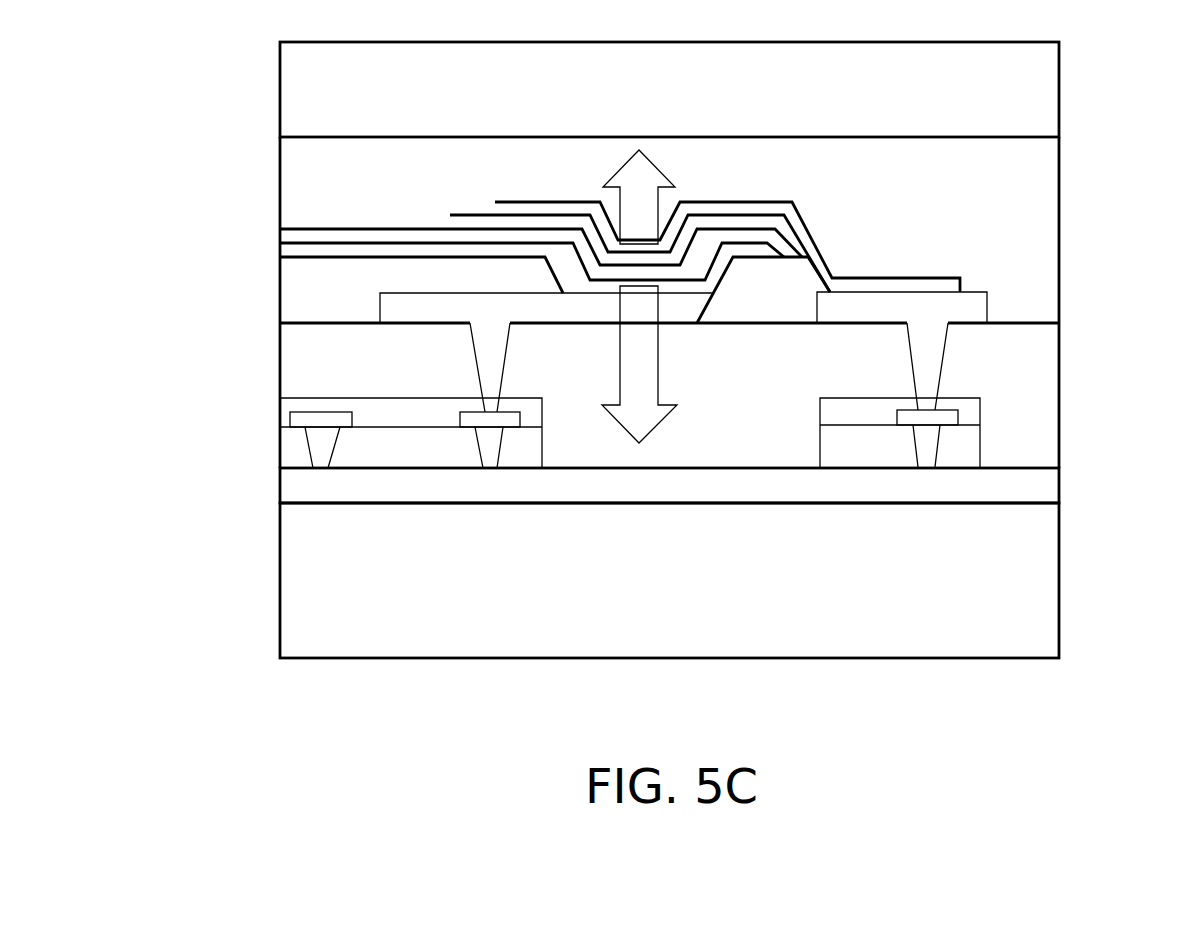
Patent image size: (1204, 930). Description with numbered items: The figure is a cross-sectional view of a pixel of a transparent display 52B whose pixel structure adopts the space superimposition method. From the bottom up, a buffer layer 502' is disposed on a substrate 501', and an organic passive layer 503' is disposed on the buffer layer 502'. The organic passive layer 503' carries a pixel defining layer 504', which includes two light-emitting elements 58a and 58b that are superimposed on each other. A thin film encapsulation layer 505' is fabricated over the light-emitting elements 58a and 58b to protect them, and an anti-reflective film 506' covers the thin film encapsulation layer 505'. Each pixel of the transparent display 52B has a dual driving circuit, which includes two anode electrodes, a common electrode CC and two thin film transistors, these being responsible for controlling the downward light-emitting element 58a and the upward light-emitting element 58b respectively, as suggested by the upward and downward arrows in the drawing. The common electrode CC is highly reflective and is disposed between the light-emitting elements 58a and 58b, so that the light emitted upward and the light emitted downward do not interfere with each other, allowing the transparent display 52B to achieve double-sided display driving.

The anti-reflective film 506' is at (718, 89).
The thin film encapsulation layer 505' is at (718, 230).
The pixel defining layer 504' is at (584, 350).
The organic passive layer 503' is at (718, 395).
The buffer layer 502' is at (718, 490).
The substrate 501' is at (717, 580).
The upward light-emitting element 58b is at (462, 222).
The common electrode CC is at (313, 234).
The downward light-emitting element 58a is at (310, 250).
The transparent display 52B is at (1172, 724).